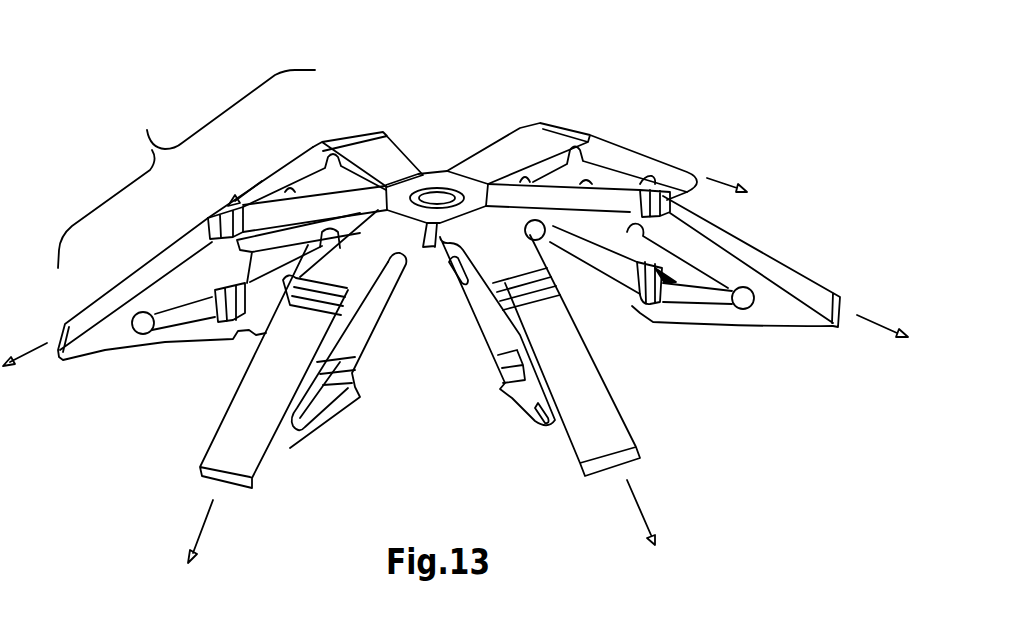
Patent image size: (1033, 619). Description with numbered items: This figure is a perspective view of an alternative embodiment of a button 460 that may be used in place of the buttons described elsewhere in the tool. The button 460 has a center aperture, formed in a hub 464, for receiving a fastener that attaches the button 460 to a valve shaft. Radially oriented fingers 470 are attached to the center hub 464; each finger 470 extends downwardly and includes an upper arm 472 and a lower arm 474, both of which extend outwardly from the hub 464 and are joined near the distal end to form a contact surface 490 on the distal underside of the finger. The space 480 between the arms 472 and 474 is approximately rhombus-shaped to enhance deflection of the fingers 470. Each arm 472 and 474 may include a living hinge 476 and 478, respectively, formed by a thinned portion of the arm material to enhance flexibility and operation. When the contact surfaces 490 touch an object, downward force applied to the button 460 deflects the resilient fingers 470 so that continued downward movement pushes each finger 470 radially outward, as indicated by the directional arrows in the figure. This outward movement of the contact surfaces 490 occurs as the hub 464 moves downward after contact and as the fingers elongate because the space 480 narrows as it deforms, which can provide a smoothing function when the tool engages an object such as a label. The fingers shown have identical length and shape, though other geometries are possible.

The button 460 is at (180, 37).
The hub 464 is at (423, 182).
The finger 470 is at (186, 169).
The upper arm 472 is at (517, 152).
The lower arm 474 is at (627, 298).
The living hinge 476 is at (647, 203).
The living hinge 478 is at (358, 395).
The space 480 is at (670, 275).
The contact surface 490 is at (63, 360).